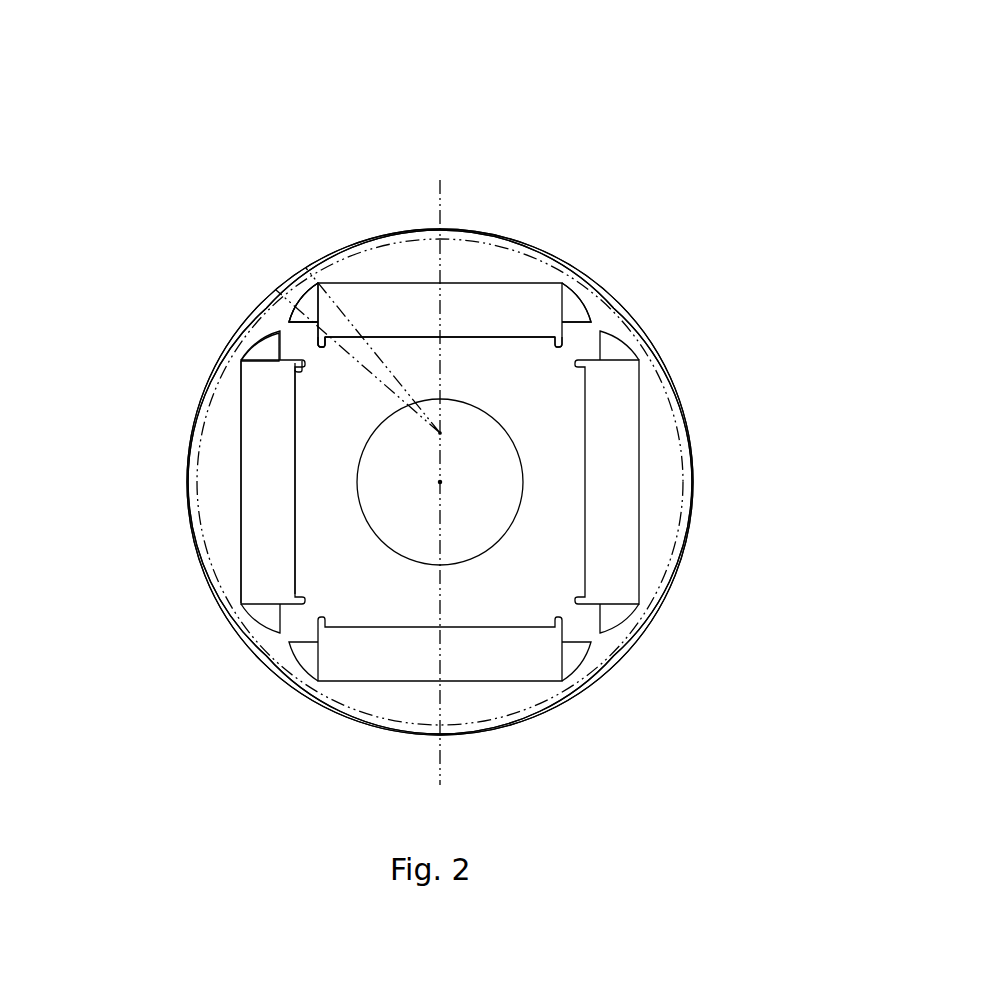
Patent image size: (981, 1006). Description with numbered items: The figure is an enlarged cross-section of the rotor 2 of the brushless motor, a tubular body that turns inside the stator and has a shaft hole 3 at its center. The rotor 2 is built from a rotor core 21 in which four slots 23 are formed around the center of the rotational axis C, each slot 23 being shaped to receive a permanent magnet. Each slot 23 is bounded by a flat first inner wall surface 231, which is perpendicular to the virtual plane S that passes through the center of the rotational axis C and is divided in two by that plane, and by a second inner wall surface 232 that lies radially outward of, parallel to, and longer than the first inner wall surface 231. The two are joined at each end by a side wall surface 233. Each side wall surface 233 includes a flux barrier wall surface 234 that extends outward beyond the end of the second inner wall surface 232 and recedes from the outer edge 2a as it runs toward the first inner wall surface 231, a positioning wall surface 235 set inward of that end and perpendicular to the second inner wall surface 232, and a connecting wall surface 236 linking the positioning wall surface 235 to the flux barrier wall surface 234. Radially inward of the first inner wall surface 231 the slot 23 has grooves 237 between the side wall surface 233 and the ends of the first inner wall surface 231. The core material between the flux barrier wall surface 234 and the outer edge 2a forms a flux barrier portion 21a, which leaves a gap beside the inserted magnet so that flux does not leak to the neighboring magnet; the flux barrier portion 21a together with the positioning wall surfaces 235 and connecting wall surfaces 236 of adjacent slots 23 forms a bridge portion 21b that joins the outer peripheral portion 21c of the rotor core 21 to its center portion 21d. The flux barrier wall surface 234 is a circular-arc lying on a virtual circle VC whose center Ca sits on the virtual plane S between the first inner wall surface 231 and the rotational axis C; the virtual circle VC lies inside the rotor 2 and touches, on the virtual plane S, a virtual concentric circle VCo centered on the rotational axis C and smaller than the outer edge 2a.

The rotor 2 is at (697, 99).
The outer edge 2a is at (692, 404).
The shaft hole 3 is at (467, 531).
The rotor core 21 is at (558, 520).
The flux barrier portion 21a is at (277, 330).
The bridge portion 21b is at (287, 366).
The outer peripheral portion 21c is at (222, 455).
The center portion 21d is at (320, 500).
The slot 23 is at (457, 303).
The first inner wall surface 231 is at (558, 357).
The second inner wall surface 232 is at (560, 346).
The side wall surface 233 is at (357, 119).
The flux barrier wall surface 234 is at (281, 318).
The positioning wall surface 235 is at (328, 341).
The connecting wall surface 236 is at (305, 321).
The groove 237 is at (557, 335).
The rotational axis C is at (446, 482).
The center of virtual circle Ca is at (446, 433).
The virtual plane S is at (441, 212).
The virtual circle VC is at (640, 324).
The virtual concentric circle VCo is at (690, 452).